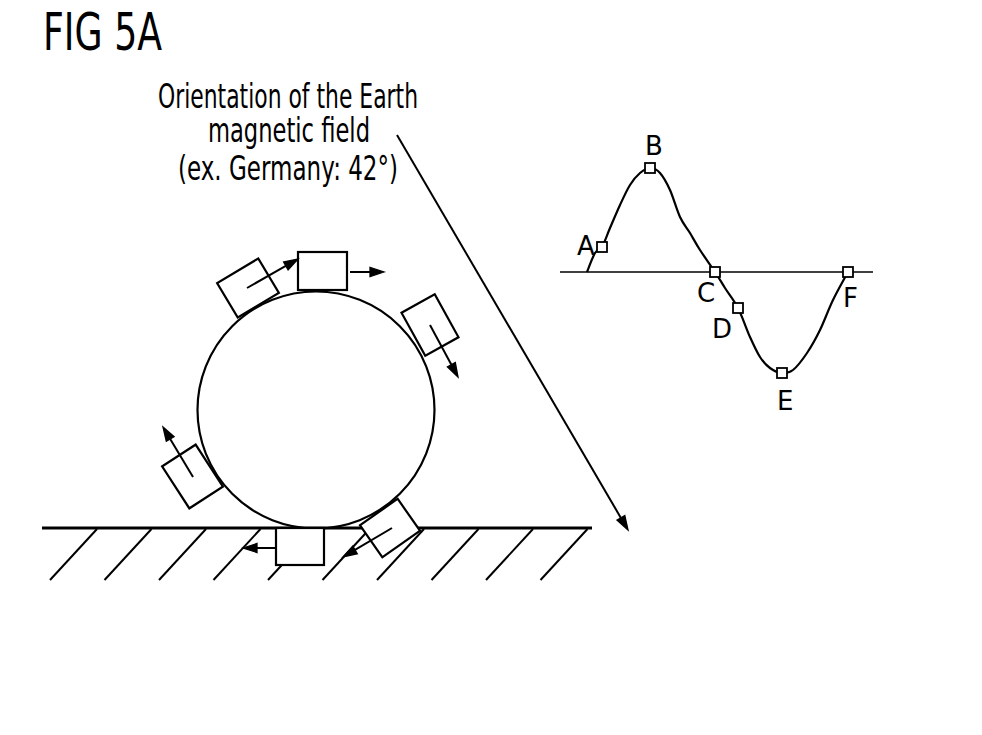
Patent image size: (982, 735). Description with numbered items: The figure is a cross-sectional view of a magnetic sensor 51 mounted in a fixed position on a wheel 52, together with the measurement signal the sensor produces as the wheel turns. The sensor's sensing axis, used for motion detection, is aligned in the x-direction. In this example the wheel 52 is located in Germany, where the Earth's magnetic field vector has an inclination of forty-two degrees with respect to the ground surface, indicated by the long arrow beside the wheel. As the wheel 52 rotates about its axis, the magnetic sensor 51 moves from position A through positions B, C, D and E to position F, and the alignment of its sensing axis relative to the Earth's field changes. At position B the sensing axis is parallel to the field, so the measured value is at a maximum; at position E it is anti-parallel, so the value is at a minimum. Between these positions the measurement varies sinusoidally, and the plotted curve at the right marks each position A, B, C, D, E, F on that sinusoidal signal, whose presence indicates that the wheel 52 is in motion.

The magnetic sensor 51 is at (227, 300).
The wheel 52 is at (213, 377).
The position A is at (341, 251).
The position B is at (434, 333).
The position C is at (387, 520).
The position D is at (283, 566).
The position E is at (187, 471).
The position F is at (239, 288).